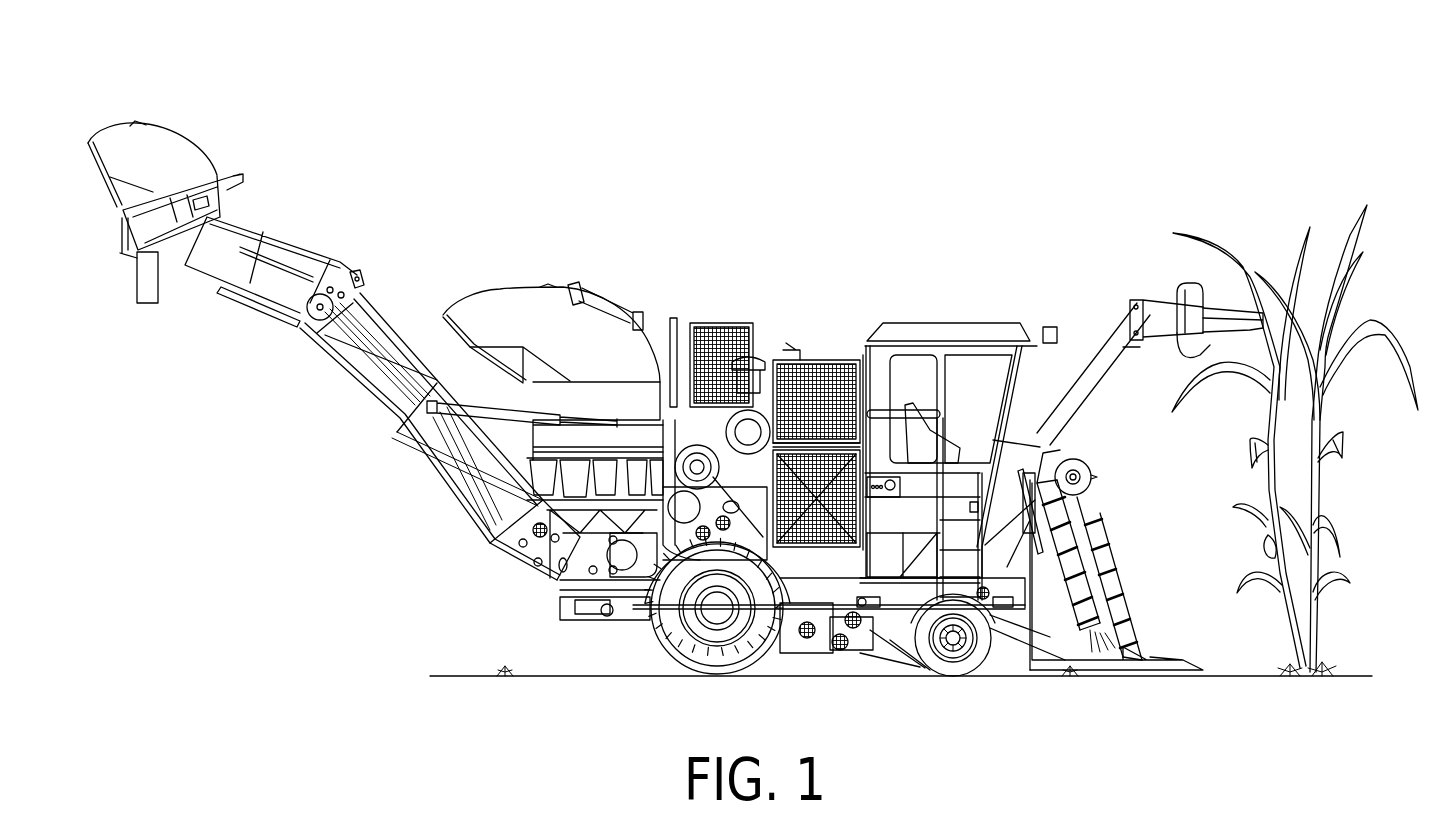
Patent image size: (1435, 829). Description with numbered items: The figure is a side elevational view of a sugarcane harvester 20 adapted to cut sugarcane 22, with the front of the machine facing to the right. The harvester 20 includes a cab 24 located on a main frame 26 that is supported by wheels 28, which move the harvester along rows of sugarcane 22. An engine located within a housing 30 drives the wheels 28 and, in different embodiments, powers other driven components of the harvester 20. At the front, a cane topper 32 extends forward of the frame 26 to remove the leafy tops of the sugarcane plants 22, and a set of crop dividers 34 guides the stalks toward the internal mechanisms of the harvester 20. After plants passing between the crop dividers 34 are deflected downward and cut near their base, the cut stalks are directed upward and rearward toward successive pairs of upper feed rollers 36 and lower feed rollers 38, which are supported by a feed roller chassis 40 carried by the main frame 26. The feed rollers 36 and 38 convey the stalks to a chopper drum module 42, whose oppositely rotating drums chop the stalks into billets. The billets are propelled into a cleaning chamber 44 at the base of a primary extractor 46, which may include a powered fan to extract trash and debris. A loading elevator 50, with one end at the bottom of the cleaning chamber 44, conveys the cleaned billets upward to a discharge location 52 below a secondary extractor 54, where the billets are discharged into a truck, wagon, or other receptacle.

The sugarcane harvester 20 is at (852, 188).
The sugarcane 22 is at (1328, 205).
The cab 24 is at (957, 328).
The main frame 26 is at (630, 640).
The wheels 28 is at (726, 655).
The housing 30 is at (832, 452).
The cane topper 32 is at (1173, 293).
The crop dividers 34 is at (1070, 633).
The upper feed rollers 36 is at (732, 507).
The lower feed rollers 38 is at (648, 585).
The feed roller chassis 40 is at (793, 607).
The chopper drum module 42 is at (678, 490).
The cleaning chamber 44 is at (573, 470).
The primary extractor 46 is at (490, 285).
The loading elevator 50 is at (345, 415).
The discharge location 52 is at (113, 232).
The secondary extractor 54 is at (167, 140).